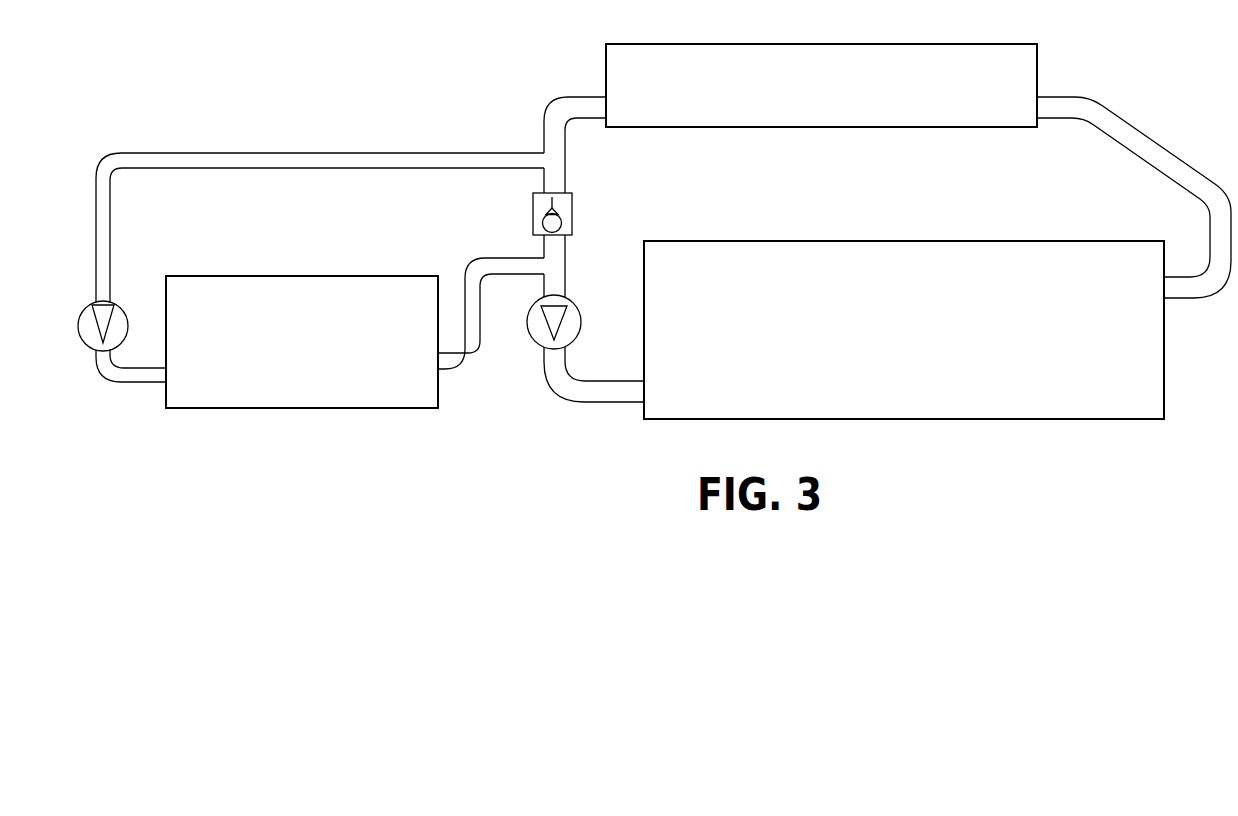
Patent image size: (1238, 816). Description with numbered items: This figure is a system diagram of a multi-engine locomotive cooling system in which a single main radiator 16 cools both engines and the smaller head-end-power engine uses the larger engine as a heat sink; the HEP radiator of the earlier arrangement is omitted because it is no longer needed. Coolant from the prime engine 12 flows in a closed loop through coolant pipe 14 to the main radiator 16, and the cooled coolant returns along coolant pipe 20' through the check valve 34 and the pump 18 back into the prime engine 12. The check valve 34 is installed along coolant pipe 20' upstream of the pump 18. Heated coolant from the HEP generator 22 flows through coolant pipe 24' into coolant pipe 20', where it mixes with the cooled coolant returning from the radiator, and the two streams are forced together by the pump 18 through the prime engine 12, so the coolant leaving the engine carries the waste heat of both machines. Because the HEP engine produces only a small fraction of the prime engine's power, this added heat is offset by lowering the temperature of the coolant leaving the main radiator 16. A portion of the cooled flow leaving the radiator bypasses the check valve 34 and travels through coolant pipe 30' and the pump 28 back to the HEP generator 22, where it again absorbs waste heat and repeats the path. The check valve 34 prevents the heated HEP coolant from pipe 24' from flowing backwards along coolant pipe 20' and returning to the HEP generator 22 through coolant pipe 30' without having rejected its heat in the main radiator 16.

The prime engine 12 is at (893, 357).
The coolant pipe 14 is at (1130, 117).
The main radiator 16 is at (858, 98).
The pump 18 is at (532, 340).
The coolant pipe 20' is at (584, 425).
The HEP generator 22 is at (318, 365).
The coolant pipe 24' is at (465, 281).
The pump 28 is at (115, 303).
The coolant pipe 30' is at (351, 216).
The check valve 34 is at (580, 208).